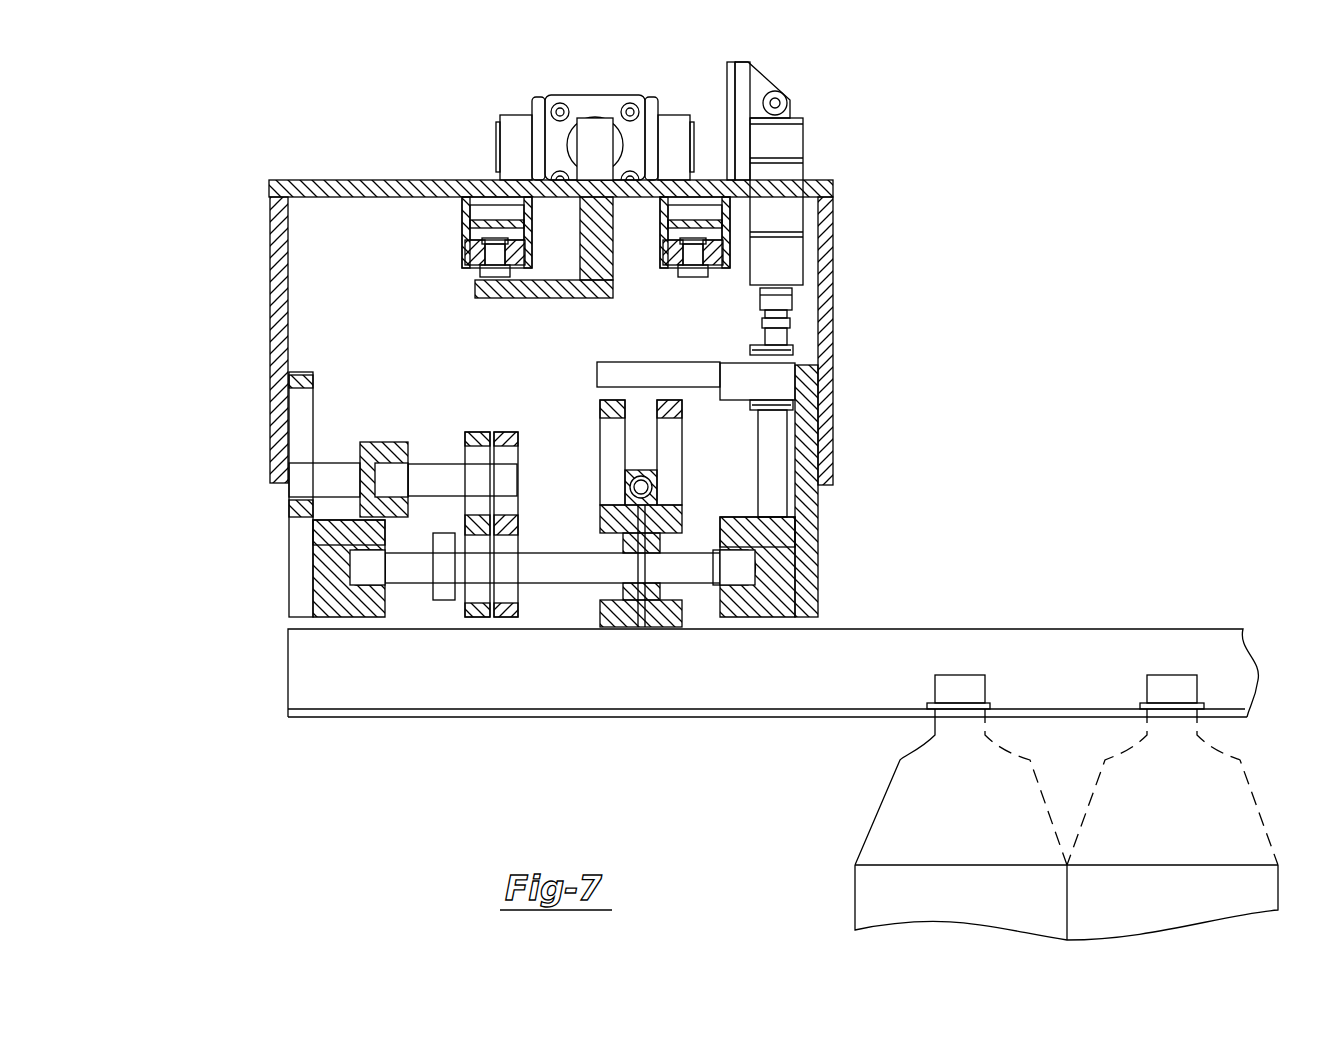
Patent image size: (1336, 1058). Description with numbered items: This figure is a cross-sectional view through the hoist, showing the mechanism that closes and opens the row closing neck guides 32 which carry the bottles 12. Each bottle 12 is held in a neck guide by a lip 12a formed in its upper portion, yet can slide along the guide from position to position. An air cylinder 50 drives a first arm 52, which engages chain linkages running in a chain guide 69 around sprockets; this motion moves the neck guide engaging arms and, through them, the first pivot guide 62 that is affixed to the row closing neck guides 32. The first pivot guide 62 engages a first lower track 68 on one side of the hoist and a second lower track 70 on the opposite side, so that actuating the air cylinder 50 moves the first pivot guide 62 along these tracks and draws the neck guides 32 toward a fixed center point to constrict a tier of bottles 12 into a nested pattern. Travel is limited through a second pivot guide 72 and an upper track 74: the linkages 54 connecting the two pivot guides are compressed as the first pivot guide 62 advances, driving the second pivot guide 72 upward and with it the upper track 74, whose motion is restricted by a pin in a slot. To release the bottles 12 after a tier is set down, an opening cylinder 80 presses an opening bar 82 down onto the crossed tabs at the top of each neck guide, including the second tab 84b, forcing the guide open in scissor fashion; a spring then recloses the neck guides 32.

The bottles 12 is at (1011, 792).
The lip 12a is at (990, 703).
The row closing neck guides 32 is at (640, 690).
The air cylinder 50 is at (620, 95).
The first arm 52 is at (595, 128).
The linkages 54 is at (505, 507).
The first pivot guide 62 is at (545, 563).
The first lower track 68 is at (330, 575).
The chain guide 69 is at (462, 228).
The second lower track 70 is at (785, 565).
The second pivot guide 72 is at (440, 474).
The upper track 74 is at (382, 450).
The opening cylinder 80 is at (795, 140).
The opening bar 82 is at (623, 372).
The second tab 84b is at (602, 410).